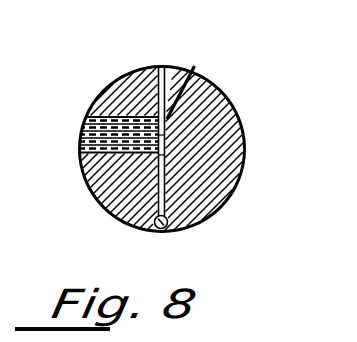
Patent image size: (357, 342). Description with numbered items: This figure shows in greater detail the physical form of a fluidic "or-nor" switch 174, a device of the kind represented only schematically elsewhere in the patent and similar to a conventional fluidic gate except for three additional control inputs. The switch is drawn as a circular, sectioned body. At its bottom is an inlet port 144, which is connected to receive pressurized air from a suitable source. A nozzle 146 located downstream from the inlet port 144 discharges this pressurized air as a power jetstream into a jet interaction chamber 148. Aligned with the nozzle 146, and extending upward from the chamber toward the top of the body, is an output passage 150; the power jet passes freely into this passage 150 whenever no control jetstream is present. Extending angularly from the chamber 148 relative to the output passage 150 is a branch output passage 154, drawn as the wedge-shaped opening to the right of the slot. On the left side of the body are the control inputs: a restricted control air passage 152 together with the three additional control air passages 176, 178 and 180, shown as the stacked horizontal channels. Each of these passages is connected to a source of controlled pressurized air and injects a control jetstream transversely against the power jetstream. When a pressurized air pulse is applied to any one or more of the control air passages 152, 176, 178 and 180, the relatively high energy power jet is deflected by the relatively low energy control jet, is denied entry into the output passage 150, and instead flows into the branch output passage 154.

The inlet port 144 is at (168, 233).
The nozzle 146 is at (166, 160).
The jet interaction chamber 148 is at (165, 135).
The output passage 150 is at (165, 66).
The restricted control air passage 152 is at (100, 118).
The branch output passage 154 is at (197, 70).
The fluidic or-nor switch 174 is at (238, 100).
The control air passage 176 is at (81, 128).
The control air passage 178 is at (79, 144).
The control air passage 180 is at (92, 168).